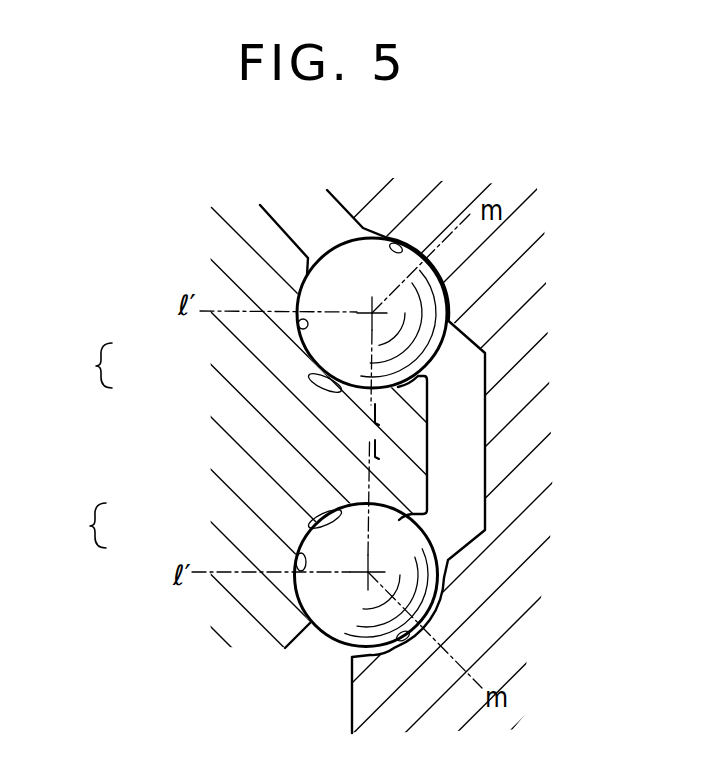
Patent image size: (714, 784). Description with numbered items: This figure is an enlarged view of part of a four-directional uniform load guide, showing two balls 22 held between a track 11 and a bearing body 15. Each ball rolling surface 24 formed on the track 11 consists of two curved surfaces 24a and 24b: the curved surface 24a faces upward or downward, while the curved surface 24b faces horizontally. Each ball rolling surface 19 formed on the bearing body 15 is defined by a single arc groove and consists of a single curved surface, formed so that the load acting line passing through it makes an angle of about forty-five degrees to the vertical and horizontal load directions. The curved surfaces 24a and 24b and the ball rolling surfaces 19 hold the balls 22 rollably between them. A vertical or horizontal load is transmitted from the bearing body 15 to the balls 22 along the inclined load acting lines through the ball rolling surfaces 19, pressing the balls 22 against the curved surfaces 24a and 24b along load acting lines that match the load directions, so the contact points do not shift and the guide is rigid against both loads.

The track 11 is at (270, 437).
The bearing body 15 is at (530, 414).
The ball rolling surface 19 is at (386, 238).
The ball 22 is at (308, 270).
The ball rolling surface 24 is at (80, 445).
The curved surface 24a is at (308, 374).
The curved surface 24b is at (300, 340).